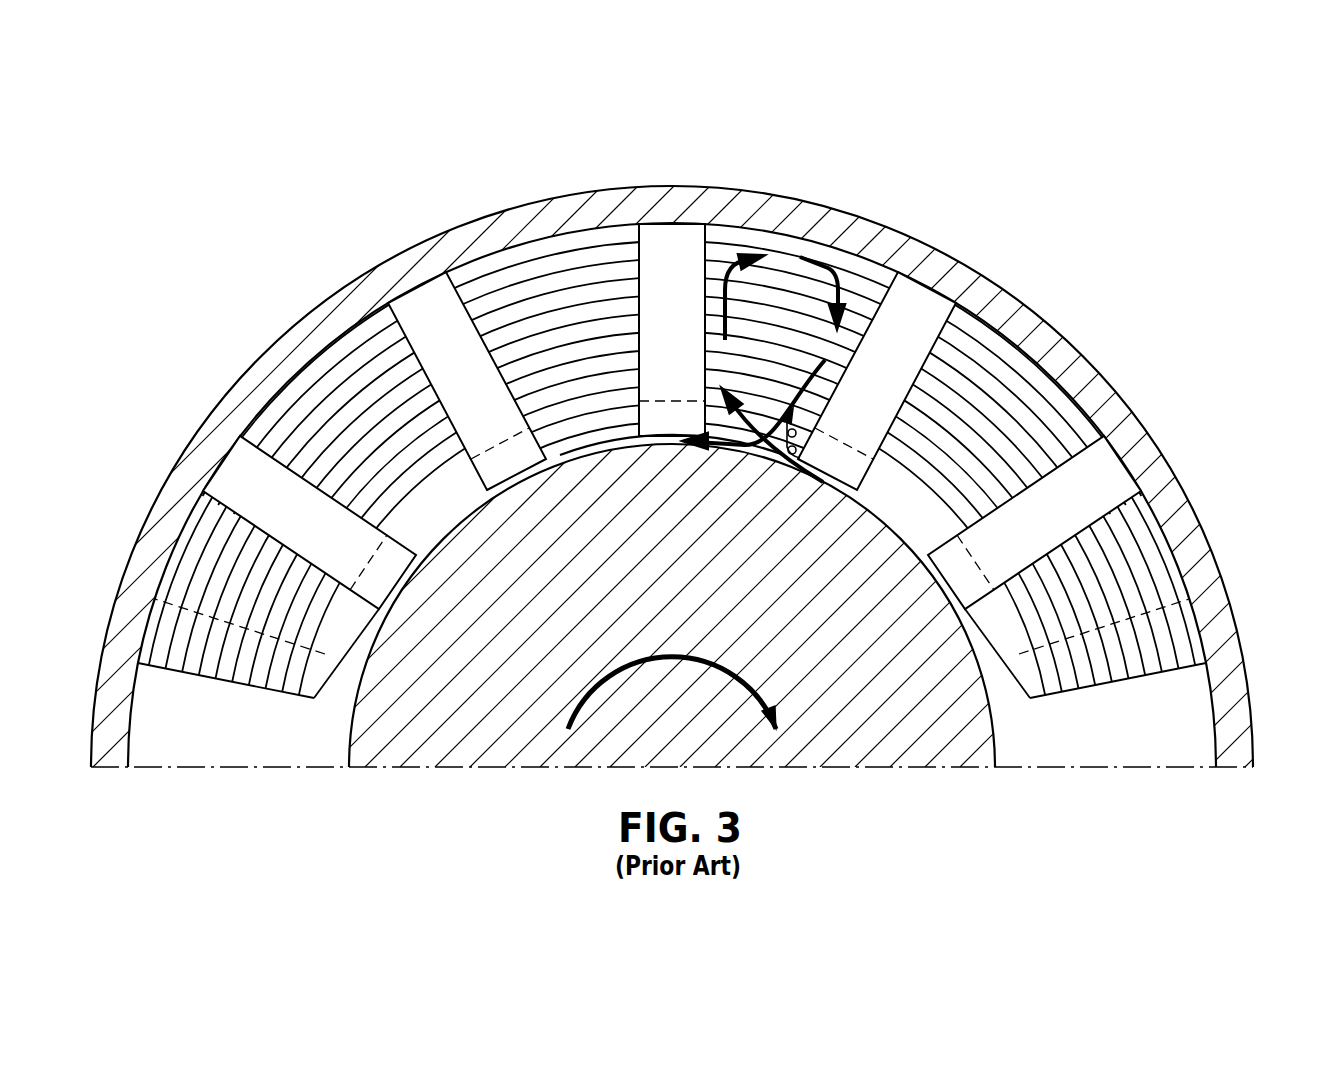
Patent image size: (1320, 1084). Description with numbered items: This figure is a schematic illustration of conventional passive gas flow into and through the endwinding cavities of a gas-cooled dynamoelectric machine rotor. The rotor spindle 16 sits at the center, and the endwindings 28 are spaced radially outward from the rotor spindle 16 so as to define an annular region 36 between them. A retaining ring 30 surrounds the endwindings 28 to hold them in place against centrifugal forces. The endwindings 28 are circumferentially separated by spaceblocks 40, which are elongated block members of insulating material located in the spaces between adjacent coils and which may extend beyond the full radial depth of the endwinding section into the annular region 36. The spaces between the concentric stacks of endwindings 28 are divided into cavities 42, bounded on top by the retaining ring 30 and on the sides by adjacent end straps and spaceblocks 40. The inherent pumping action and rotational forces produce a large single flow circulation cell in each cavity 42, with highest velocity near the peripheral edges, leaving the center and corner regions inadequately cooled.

The rotor spindle 16 is at (789, 738).
The endwindings 28 is at (1135, 683).
The retaining ring 30 is at (1220, 619).
The annular region 36 is at (580, 441).
The spaceblocks 40 is at (676, 256).
The cavities 42 is at (992, 372).